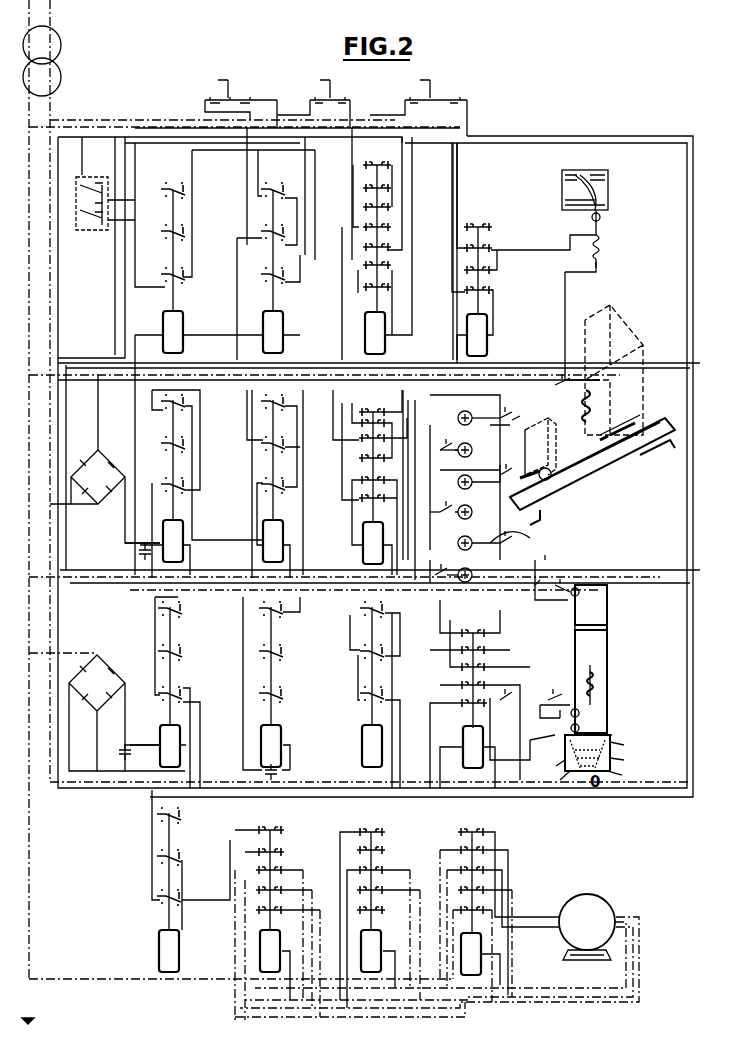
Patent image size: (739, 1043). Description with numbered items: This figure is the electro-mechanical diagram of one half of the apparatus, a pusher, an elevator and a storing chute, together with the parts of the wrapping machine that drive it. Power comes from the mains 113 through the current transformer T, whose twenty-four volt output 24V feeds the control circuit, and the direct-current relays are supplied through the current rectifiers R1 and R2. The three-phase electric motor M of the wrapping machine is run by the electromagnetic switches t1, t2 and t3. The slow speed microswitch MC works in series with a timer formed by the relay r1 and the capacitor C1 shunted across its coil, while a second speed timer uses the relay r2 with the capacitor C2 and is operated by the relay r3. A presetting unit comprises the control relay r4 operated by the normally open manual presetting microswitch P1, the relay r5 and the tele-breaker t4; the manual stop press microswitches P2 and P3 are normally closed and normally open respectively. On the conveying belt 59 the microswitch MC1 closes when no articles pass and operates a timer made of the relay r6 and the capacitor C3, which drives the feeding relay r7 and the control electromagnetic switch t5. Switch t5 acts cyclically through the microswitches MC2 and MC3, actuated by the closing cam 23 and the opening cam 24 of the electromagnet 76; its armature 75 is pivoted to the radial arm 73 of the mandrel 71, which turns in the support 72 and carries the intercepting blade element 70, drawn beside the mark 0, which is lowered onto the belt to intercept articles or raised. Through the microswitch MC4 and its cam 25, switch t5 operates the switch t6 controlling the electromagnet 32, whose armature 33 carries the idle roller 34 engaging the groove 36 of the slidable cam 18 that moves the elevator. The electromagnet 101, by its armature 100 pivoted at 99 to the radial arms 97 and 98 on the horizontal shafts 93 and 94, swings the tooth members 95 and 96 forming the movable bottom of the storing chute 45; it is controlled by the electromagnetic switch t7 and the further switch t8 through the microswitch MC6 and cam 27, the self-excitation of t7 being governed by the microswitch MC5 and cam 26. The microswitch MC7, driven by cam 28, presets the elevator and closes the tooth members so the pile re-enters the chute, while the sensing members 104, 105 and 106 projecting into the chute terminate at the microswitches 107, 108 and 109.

The mains 113 is at (50, 14).
The current transformer T is at (61, 63).
The twenty-four volt output 24V is at (50, 104).
The manual press presetting microswitch P1 is at (241, 99).
The manual stop press microswitch P2 is at (316, 99).
The manual press microswitch P3 is at (418, 103).
The slow speed microswitch MC is at (96, 178).
The groove of slidable cam 36 is at (586, 176).
The slidable cam 18 is at (608, 190).
The idle roller 34 is at (600, 217).
The electromagnet 32 is at (600, 250).
The armature 33 is at (600, 272).
The armature 75 is at (601, 370).
The electromagnet 76 is at (573, 406).
The mandrel 71 is at (624, 415).
The intercepting blade element 70 is at (650, 420).
The support 72 is at (617, 420).
The radial arm 73 is at (550, 449).
The zero position 0 is at (573, 509).
The microswitch MC1 is at (544, 390).
The microswitch MC2 is at (435, 449).
The microswitch MC3 is at (433, 512).
The microswitch MC4 is at (510, 416).
The microswitch MC5 is at (470, 640).
The microswitch MC6 is at (494, 562).
The microswitch MC7 is at (490, 469).
The cam 25 is at (458, 418).
The closing cam 23 is at (472, 450).
The cam 28 is at (458, 482).
The opening cam 24 is at (472, 512).
The cam 27 is at (458, 543).
The cam 26 is at (472, 575).
The conveying belt 59 is at (516, 531).
The current rectifier R1 is at (112, 452).
The current rectifier R2 is at (103, 660).
The capacitor C1 is at (278, 774).
The capacitor C2 is at (120, 760).
The capacitor C3 is at (140, 552).
The relay r1 is at (271, 683).
The relay r2 is at (165, 692).
The relay r3 is at (191, 881).
The control relay r4 is at (275, 267).
The relay r5 is at (192, 267).
The relay r6 is at (201, 484).
The feeding relay r7 is at (275, 484).
The electromagnetic switch t1 is at (277, 913).
The electromagnetic switch t2 is at (380, 918).
The electromagnetic switch t3 is at (500, 911).
The tele-breaker t4 is at (377, 257).
The control electromagnetic switch t5 is at (370, 482).
The electromagnetic switch t6 is at (526, 293).
The electromagnetic switch t7 is at (480, 694).
The timer relay t8 is at (375, 694).
The storing chute 45 is at (607, 640).
The sensing member 106 is at (570, 577).
The microswitch 109 is at (552, 611).
The microswitch 108 is at (558, 700).
The armature 100 is at (595, 675).
The electromagnet 101 is at (595, 685).
The sensing member 105 is at (580, 713).
The sensing member 104 is at (580, 728).
The pivot 99 is at (612, 735).
The microswitch 107 is at (522, 724).
The horizontal shaft 93 is at (578, 753).
The horizontal shaft 94 is at (628, 743).
The tooth member 95 is at (558, 781).
The tooth member 96 is at (627, 775).
The radial arm 97 is at (556, 765).
The radial arm 98 is at (628, 759).
The three-phase electric motor M is at (610, 904).